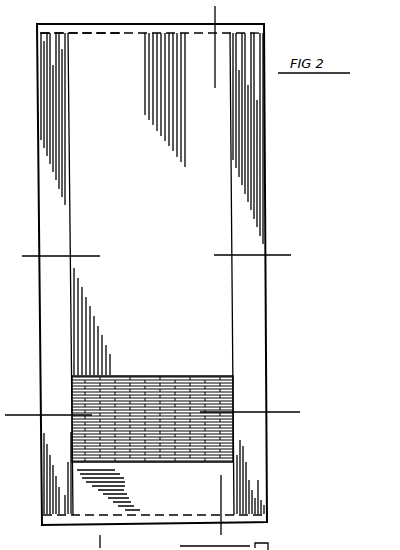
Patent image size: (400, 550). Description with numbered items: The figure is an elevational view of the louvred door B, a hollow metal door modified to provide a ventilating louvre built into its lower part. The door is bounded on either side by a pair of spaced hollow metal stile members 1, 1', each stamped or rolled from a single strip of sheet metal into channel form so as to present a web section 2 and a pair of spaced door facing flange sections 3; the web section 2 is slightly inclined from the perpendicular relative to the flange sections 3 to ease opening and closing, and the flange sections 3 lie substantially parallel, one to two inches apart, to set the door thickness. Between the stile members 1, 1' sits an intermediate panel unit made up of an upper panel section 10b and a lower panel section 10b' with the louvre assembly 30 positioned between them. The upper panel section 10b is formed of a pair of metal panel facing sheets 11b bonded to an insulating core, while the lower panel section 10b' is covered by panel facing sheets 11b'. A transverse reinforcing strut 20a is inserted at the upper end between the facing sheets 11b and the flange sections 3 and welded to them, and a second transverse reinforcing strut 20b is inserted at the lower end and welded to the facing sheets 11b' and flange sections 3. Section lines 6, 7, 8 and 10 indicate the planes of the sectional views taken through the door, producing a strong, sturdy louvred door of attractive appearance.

The stile member 1 is at (23, 223).
The stile member 1' is at (282, 196).
The web section 2 is at (41, 350).
The door facing flange section 3 is at (156, 274).
The section line 6 is at (184, 12).
The section line 7 is at (26, 285).
The section line 8 is at (10, 445).
The section line 10 is at (142, 540).
The upper panel section 10b is at (152, 25).
The lower panel section 10b' is at (281, 477).
The panel facing sheet 11b is at (152, 204).
The panel facing sheet 11b' is at (154, 473).
The transverse reinforcing strut 20a is at (133, 33).
The transverse reinforcing strut 20b is at (135, 513).
The louvre assembly 30 is at (148, 388).
The louvred door B is at (270, 137).